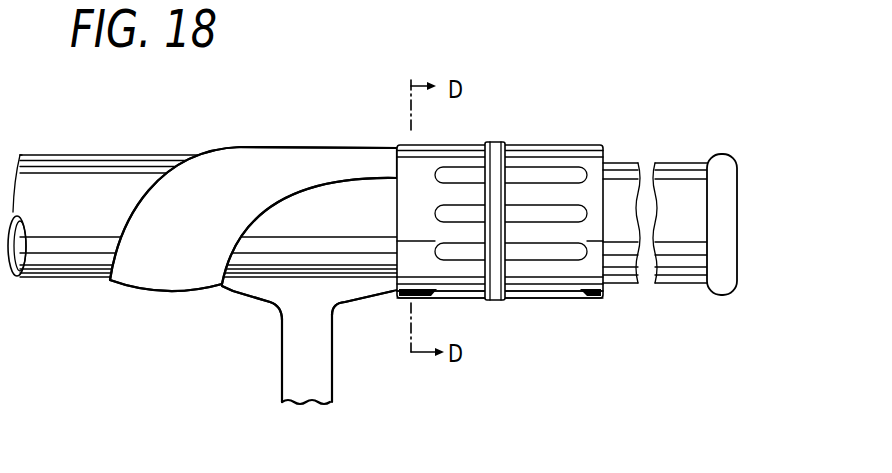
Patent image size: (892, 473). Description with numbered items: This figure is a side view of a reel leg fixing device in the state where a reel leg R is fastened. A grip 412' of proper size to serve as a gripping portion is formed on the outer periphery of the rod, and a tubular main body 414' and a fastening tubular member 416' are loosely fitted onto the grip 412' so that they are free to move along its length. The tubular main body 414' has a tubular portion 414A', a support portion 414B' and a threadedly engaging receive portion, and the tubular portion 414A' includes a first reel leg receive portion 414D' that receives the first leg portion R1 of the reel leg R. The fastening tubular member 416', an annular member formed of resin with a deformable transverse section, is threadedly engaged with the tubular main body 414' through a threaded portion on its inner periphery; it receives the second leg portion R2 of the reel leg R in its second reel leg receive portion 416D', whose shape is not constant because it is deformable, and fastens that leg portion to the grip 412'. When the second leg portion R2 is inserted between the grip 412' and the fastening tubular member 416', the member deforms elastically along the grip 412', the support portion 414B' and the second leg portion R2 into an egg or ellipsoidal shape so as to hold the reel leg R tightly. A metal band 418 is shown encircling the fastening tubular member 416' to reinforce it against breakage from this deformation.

The grip 412' is at (202, 189).
The tubular main body 414' is at (214, 220).
The tubular portion 414A' is at (136, 240).
The support portion 414B' is at (309, 183).
The first reel leg receive portion 414D' is at (168, 318).
The fastening tubular member 416' is at (486, 239).
The second reel leg receive portion 416D' is at (486, 340).
The clamp band 418 is at (495, 158).
The reel leg R is at (307, 355).
The first leg portion R1 is at (255, 287).
The second leg portion R2 is at (347, 293).